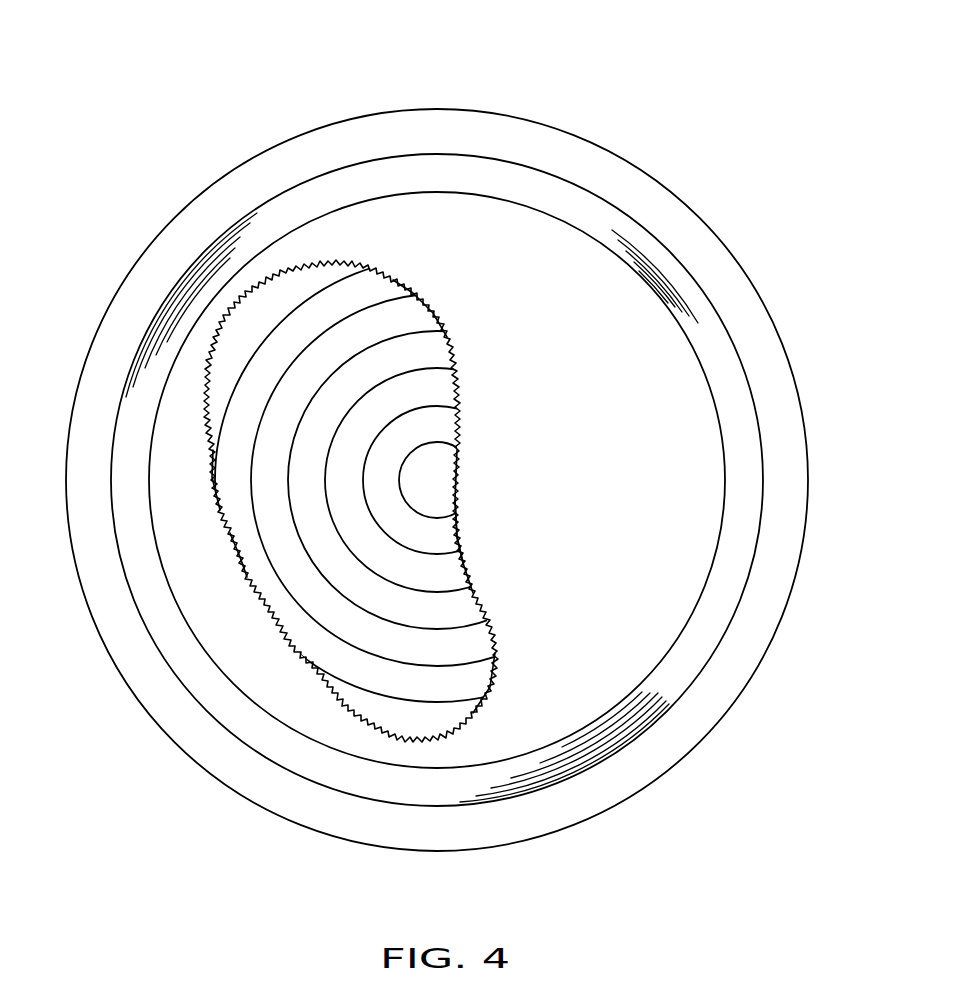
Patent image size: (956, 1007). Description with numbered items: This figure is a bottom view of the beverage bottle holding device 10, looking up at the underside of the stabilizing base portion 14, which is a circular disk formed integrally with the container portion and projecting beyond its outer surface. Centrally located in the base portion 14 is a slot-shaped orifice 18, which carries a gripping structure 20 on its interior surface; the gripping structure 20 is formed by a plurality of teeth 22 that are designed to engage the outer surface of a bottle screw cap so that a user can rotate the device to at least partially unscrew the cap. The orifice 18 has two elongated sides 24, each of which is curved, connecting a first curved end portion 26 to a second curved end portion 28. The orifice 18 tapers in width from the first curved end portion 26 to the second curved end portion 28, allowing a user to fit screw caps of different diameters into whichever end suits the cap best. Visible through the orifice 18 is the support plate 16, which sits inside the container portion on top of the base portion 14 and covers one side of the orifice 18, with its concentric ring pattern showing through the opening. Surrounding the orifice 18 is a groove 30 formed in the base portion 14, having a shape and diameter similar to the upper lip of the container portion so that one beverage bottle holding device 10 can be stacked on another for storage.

The beverage bottle holding device 10 is at (205, 132).
The stabilizing base portion 14 is at (665, 211).
The support plate 16 is at (277, 363).
The orifice 18 is at (453, 505).
The gripping structure 20 is at (272, 548).
The teeth 22 is at (307, 263).
The elongated sides 24 is at (178, 485).
The first curved end portion 26 is at (455, 295).
The second curved end portion 28 is at (511, 719).
The groove 30 is at (703, 333).